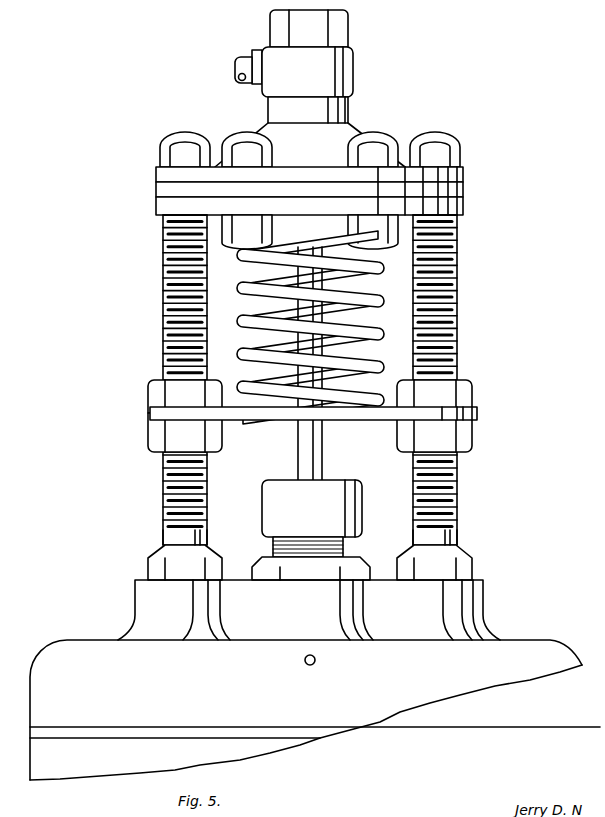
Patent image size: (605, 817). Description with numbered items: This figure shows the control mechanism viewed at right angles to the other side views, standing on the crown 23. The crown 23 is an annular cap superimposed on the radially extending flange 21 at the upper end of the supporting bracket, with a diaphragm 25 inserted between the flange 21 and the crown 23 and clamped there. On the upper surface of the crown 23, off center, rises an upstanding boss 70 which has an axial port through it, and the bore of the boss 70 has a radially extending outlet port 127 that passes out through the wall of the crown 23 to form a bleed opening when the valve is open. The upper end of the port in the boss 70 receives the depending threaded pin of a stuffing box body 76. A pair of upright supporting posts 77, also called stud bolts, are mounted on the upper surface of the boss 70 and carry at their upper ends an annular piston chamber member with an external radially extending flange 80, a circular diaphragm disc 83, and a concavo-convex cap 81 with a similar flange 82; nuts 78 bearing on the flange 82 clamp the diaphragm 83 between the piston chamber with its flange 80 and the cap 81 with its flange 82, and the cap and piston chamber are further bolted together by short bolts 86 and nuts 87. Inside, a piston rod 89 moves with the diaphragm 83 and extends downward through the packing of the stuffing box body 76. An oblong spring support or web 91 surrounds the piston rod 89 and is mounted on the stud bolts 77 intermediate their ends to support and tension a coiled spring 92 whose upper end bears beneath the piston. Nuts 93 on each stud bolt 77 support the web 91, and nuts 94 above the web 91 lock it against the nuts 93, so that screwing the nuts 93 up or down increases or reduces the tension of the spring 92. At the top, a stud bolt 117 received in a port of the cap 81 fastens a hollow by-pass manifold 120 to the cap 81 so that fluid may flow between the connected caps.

The stud bolt 117 is at (309, 28).
The hollow by-pass manifold 120 is at (294, 72).
The concavo-convex cap 81 is at (310, 132).
The nuts 78 is at (178, 132).
The short bolts 86 is at (250, 133).
The flange 82 is at (168, 173).
The diaphragm disc 83 is at (165, 189).
The flange 80 is at (165, 206).
The nuts 87 is at (310, 232).
The supporting posts 77 is at (165, 287).
The coiled spring 92 is at (252, 316).
The piston rod 89 is at (305, 355).
The nuts 94 is at (310, 396).
The spring support or web 91 is at (150, 412).
The nuts 93 is at (310, 432).
The stuffing box body 76 is at (311, 530).
The boss 70 is at (502, 598).
The crown 23 is at (90, 628).
The outlet port 127 is at (304, 660).
The diaphragm 25 is at (185, 711).
The flange 21 is at (175, 748).